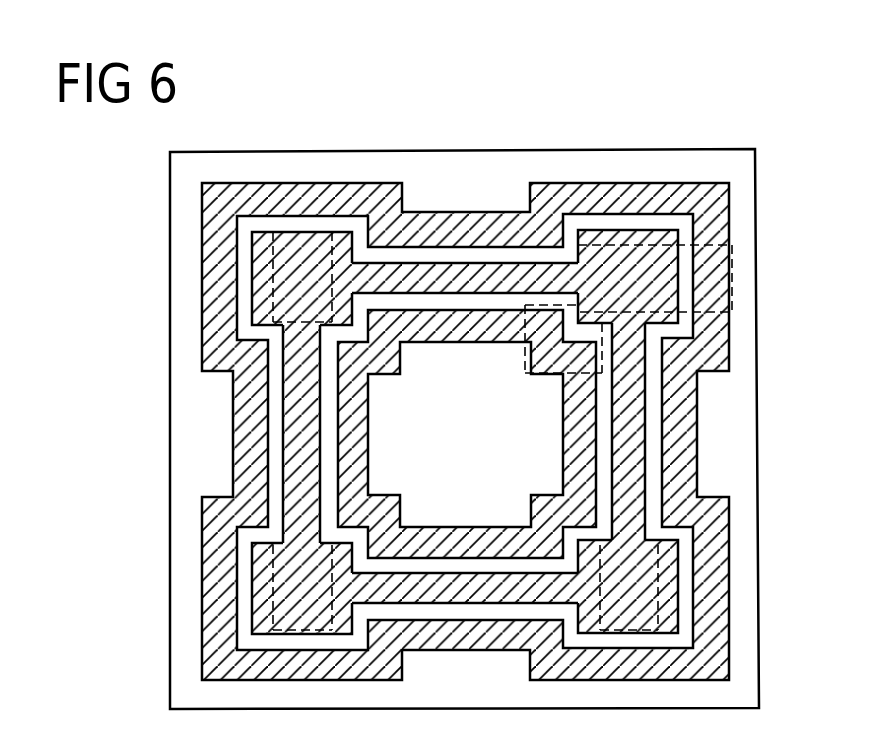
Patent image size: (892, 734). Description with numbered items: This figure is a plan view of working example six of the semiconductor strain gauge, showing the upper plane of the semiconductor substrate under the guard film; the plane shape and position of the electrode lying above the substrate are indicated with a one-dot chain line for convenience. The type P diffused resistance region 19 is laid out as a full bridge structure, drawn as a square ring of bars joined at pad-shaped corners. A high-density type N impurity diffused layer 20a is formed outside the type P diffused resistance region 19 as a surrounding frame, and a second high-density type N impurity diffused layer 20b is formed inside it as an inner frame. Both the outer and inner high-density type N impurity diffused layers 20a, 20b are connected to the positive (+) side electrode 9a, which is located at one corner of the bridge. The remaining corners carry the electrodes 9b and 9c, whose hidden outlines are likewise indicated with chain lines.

The positive side electrode 9a is at (733, 277).
The second pad electrode 9b is at (267, 592).
The third pad electrode 9c is at (272, 229).
The type P diffused resistance region 19 is at (483, 262).
The high-density type N impurity diffused layer 20a is at (698, 410).
The high-density type N impurity diffused layer 20b is at (598, 440).